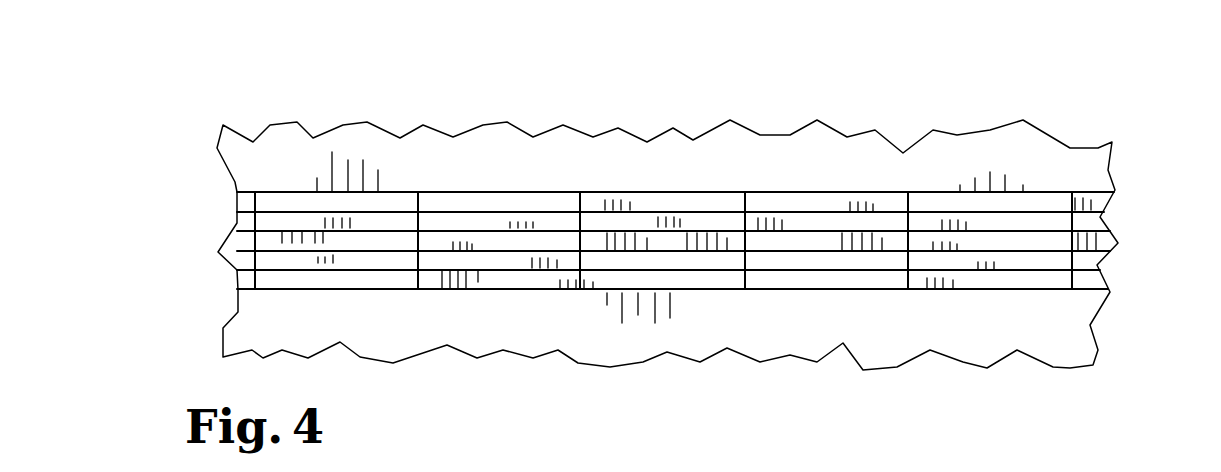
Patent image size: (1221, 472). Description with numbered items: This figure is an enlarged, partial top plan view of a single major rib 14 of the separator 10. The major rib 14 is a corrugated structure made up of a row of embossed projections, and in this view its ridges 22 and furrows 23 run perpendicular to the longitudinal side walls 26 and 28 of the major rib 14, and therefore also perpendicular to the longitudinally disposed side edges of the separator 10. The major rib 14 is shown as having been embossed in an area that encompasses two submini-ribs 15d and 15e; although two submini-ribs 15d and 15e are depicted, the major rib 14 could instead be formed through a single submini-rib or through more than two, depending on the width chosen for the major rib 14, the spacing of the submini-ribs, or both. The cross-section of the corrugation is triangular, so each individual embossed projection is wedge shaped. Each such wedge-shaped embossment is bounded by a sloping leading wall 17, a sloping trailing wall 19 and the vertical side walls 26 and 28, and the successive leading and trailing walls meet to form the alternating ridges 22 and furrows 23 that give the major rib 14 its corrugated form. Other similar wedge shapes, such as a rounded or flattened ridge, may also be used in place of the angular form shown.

The separator 10 is at (398, 44).
The major rib 14 is at (1127, 183).
The submini-rib 15d is at (848, 266).
The submini-rib 15e is at (852, 207).
The sloping leading wall 17 is at (480, 212).
The sloping trailing wall 19 is at (405, 212).
The ridges 22 is at (255, 212).
The furrows 23 is at (415, 258).
The longitudinal side wall 26 is at (788, 210).
The longitudinal side wall 28 is at (527, 290).